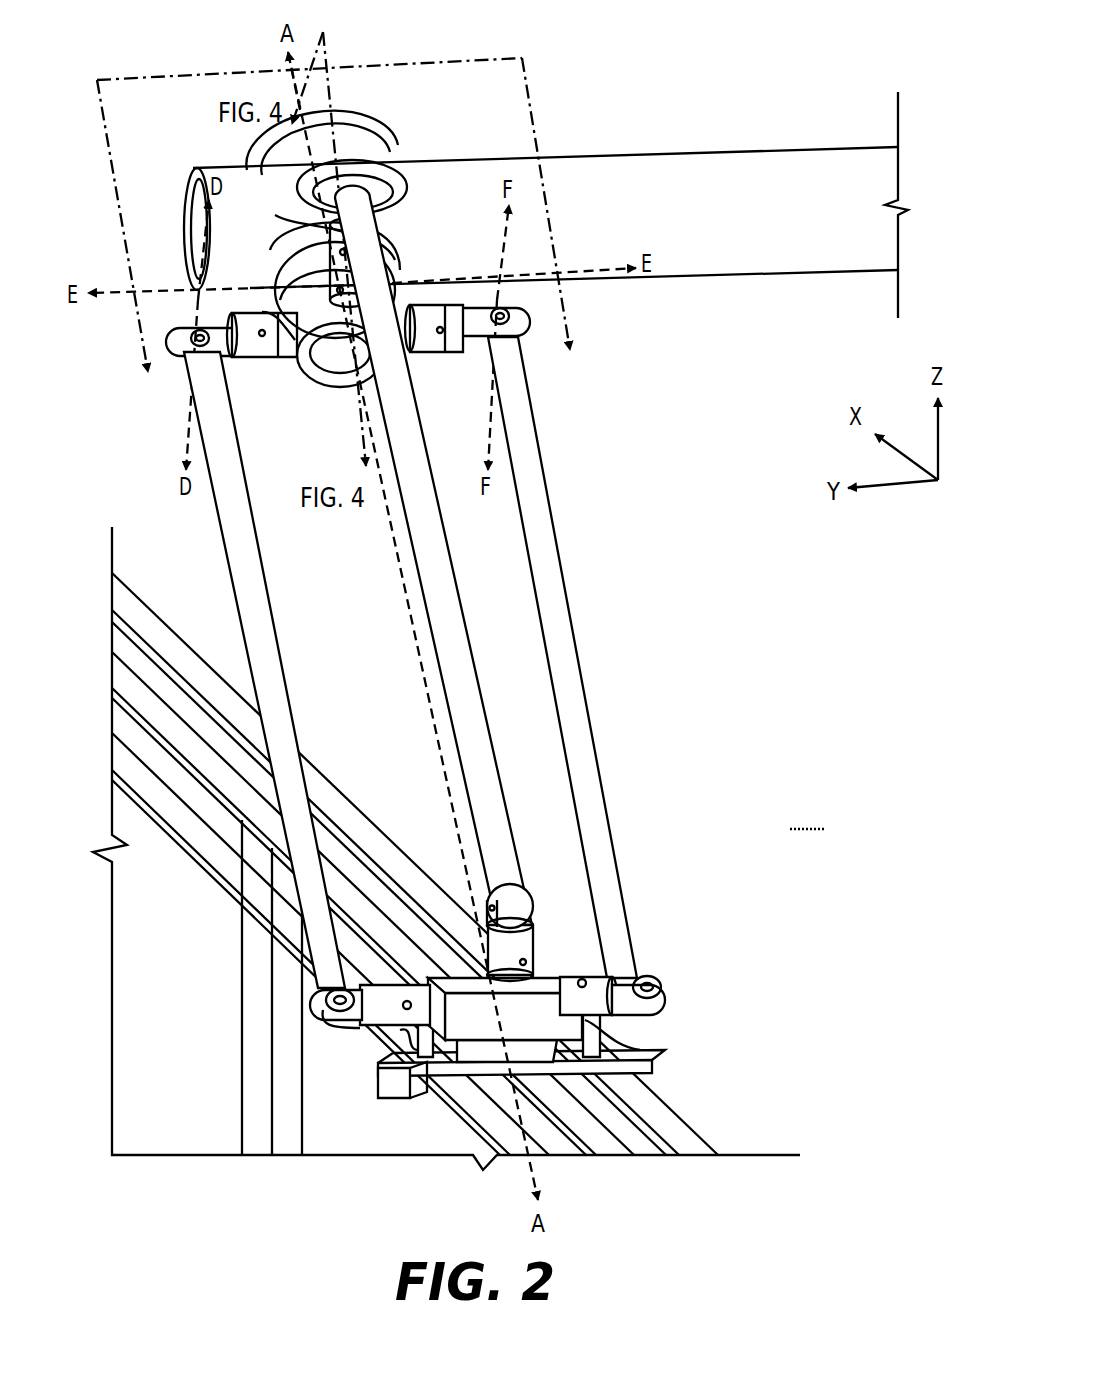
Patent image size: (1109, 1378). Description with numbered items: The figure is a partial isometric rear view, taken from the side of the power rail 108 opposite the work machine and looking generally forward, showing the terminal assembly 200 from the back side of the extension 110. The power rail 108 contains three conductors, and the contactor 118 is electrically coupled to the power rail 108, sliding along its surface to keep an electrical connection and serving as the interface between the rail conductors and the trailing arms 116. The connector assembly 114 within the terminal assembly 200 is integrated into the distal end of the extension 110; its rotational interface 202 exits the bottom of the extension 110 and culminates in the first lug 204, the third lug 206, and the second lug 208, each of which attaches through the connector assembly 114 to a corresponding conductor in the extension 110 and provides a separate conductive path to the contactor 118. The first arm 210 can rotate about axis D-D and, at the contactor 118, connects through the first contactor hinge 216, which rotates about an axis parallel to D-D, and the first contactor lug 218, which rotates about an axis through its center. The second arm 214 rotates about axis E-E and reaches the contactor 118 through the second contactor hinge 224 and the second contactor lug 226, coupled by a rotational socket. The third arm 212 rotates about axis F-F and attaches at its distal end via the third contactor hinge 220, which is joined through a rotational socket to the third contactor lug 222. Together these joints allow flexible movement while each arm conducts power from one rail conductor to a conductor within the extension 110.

The power rail 108 is at (705, 1120).
The extension 110 is at (778, 187).
The connector assembly 114 is at (232, 148).
The trailing arms 116 is at (645, 740).
The contactor 118 is at (583, 1033).
The terminal assembly 200 is at (808, 815).
The rotational interface 202 is at (332, 404).
The first lug 204 is at (260, 323).
The third lug 206 is at (448, 306).
The second lug 208 is at (404, 280).
The first arm 210 is at (278, 713).
The third arm 212 is at (538, 488).
The second arm 214 is at (455, 655).
The first contactor hinge 216 is at (336, 994).
The first contactor lug 218 is at (398, 1006).
The third contactor hinge 220 is at (652, 979).
The third contactor lug 222 is at (590, 973).
The second contactor hinge 224 is at (512, 912).
The second contactor lug 226 is at (510, 967).